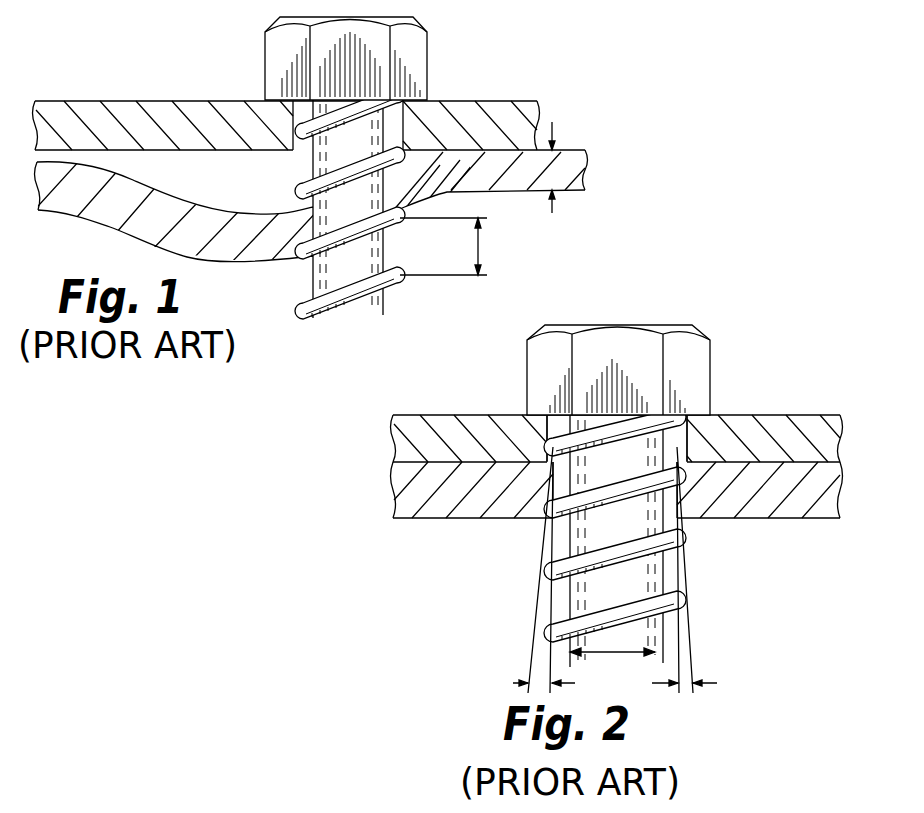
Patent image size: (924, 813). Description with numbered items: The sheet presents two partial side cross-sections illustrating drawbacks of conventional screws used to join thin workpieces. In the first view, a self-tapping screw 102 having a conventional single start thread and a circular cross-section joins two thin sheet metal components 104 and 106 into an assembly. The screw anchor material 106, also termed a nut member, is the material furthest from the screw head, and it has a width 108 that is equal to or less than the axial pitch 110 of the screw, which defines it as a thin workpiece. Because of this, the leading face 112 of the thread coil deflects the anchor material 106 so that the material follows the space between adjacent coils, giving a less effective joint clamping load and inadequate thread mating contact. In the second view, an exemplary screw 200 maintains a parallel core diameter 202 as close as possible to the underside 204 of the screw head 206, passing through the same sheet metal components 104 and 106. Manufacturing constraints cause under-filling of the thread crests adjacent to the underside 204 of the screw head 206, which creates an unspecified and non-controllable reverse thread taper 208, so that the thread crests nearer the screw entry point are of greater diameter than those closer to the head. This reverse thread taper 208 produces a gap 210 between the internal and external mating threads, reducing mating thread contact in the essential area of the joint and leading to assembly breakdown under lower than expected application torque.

In FIG. 1, the self-tapping screw 102 is at (384, 168).
In FIG. 1, the sheet metal component 104 is at (218, 133).
In FIG. 2, the sheet metal component 104 is at (825, 444).
In FIG. 1, the screw anchor material 106 is at (228, 240).
In FIG. 2, the screw anchor material 106 is at (820, 503).
In FIG. 1, the width 108 is at (552, 124).
In FIG. 1, the axial pitch 110 is at (474, 246).
In FIG. 1, the leading face 112 is at (392, 212).
In FIG. 2, the screw 200 is at (652, 492).
In FIG. 2, the parallel core diameter 202 is at (623, 654).
In FIG. 2, the underside of the screw head 204 is at (691, 422).
In FIG. 2, the screw head 206 is at (711, 361).
In FIG. 2, the reverse thread taper 208 is at (717, 683).
In FIG. 2, the gap 210 is at (686, 463).